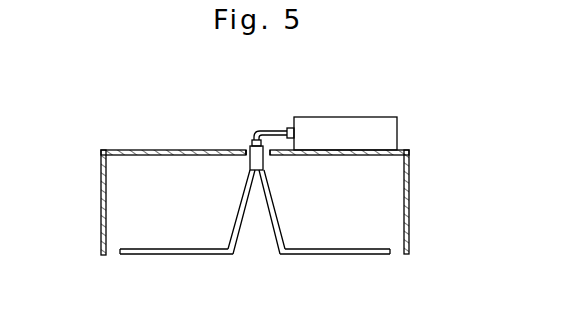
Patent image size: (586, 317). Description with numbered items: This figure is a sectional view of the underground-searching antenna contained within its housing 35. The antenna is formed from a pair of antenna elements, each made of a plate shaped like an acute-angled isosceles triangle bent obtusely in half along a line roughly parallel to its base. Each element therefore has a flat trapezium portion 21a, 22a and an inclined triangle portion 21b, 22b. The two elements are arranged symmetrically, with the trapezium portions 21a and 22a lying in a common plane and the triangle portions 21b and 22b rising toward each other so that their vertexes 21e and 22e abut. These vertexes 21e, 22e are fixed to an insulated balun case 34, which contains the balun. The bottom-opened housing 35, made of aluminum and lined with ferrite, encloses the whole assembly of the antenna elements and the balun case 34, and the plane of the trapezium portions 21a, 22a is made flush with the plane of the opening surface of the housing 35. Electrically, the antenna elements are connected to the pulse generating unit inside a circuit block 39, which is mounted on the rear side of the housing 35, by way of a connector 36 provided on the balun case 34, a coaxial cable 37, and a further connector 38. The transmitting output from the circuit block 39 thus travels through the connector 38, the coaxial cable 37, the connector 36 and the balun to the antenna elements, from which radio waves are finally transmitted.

The trapezium portion 21a is at (155, 258).
The triangle portion 21b is at (238, 215).
The vertex 21e is at (251, 170).
The trapezium portion 22a is at (343, 258).
The triangle portion 22b is at (278, 225).
The vertex 22e is at (264, 171).
The balun case 34 is at (245, 150).
The housing 35 is at (410, 210).
The connector 36 is at (252, 156).
The coaxial cable 37 is at (273, 129).
The connector 38 is at (296, 117).
The circuit block 39 is at (368, 130).